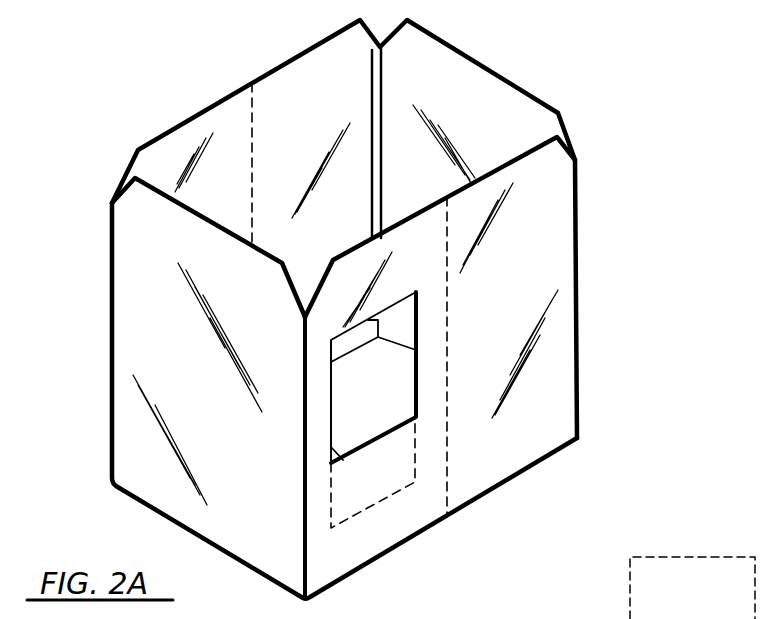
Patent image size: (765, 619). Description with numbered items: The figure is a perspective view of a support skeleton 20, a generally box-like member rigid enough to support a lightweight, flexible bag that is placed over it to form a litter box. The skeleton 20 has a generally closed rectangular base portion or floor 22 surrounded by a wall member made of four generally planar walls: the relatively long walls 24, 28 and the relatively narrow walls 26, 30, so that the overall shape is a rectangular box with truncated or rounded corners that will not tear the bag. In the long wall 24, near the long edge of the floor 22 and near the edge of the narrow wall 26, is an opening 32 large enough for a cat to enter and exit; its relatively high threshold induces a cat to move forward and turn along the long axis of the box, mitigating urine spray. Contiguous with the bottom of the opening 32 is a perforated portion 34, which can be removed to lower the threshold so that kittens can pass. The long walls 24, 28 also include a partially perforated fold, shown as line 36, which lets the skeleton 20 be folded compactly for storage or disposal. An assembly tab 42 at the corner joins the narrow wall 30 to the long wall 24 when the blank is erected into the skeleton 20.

The support skeleton 20 is at (578, 316).
The floor 22 is at (387, 408).
The long wall 24 is at (545, 218).
The narrow wall 26 is at (167, 332).
The long wall 28 is at (272, 110).
The narrow wall 30 is at (497, 114).
The opening 32 is at (392, 378).
The perforated portion 34 is at (387, 477).
The fold line 36 is at (252, 181).
The assembly tab 42 is at (377, 55).